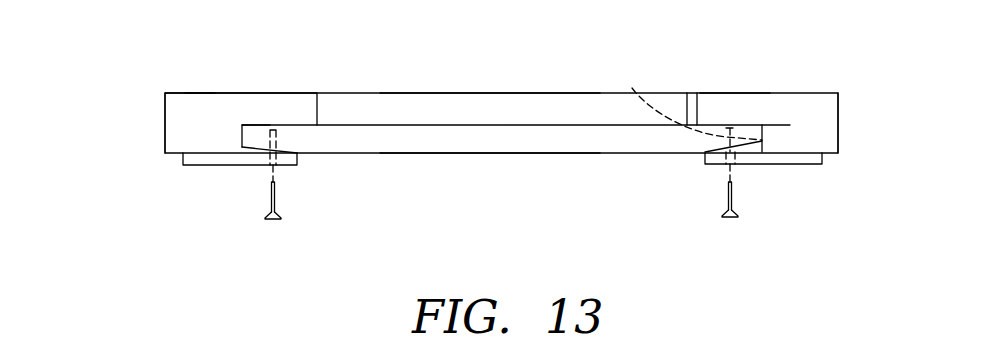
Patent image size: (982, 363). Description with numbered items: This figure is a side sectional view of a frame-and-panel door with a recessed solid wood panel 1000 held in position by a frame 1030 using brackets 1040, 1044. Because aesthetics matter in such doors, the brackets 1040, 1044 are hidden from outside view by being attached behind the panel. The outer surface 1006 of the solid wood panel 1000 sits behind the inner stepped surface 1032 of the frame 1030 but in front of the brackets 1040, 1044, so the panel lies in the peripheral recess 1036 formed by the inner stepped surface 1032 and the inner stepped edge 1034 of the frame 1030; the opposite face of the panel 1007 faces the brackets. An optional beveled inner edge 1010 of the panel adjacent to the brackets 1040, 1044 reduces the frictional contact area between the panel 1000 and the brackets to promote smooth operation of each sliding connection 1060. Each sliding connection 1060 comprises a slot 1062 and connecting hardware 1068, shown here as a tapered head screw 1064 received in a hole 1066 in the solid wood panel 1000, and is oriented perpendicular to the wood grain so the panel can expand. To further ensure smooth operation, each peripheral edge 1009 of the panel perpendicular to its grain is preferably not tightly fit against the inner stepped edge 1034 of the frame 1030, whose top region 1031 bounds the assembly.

The solid wood panel 1000 is at (501, 93).
The outer surface 1006 is at (490, 56).
The bottom surface 1007 is at (490, 190).
The peripheral edge 1009 is at (274, 85).
The beveled inner edge 1010 is at (247, 187).
The frame 1030 is at (194, 123).
The top edge of left block 1031 is at (206, 56).
The inner stepped surface 1032 is at (670, 72).
The inner stepped edge 1034 is at (811, 99).
The peripheral recess 1036 is at (735, 57).
The bracket 1040 is at (214, 198).
The bracket 1044 is at (799, 192).
The sliding connection 1060 is at (327, 240).
The slot 1062 is at (303, 118).
The tapered head screw 1064 is at (693, 210).
The hole 1066 is at (677, 98).
The connecting hardware 1068 is at (756, 169).